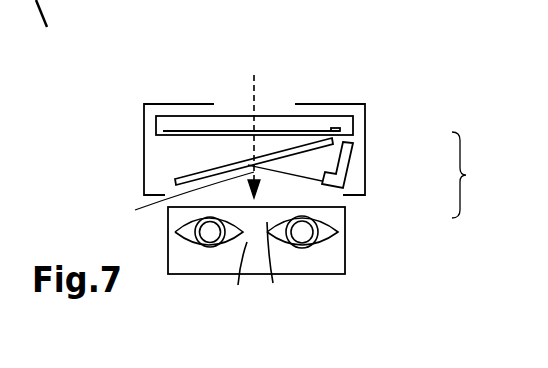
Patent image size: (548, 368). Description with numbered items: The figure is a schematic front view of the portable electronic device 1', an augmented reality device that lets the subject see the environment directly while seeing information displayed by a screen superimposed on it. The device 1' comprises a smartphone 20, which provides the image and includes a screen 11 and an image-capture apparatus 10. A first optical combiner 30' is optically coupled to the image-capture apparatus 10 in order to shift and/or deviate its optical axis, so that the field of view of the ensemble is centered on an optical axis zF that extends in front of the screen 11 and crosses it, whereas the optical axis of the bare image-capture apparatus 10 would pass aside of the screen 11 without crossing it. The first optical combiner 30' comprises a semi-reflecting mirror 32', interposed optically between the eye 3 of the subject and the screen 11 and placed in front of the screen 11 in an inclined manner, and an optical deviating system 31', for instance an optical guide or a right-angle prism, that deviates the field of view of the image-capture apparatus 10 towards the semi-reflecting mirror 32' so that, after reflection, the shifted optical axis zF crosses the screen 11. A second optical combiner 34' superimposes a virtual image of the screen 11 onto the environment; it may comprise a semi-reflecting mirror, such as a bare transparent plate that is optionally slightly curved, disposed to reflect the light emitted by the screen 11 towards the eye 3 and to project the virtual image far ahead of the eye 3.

The portable electronic device 1' is at (282, 97).
The smartphone 20 is at (270, 98).
The image-capture apparatus 10 is at (340, 139).
The screen 11 is at (197, 137).
The semi-reflecting mirror 32' is at (344, 163).
The optical deviating system 31' is at (381, 179).
The first optical combiner 30' is at (477, 175).
The second optical combiner 34' is at (296, 247).
The eye 3 is at (297, 262).
The optical axis zF is at (178, 194).